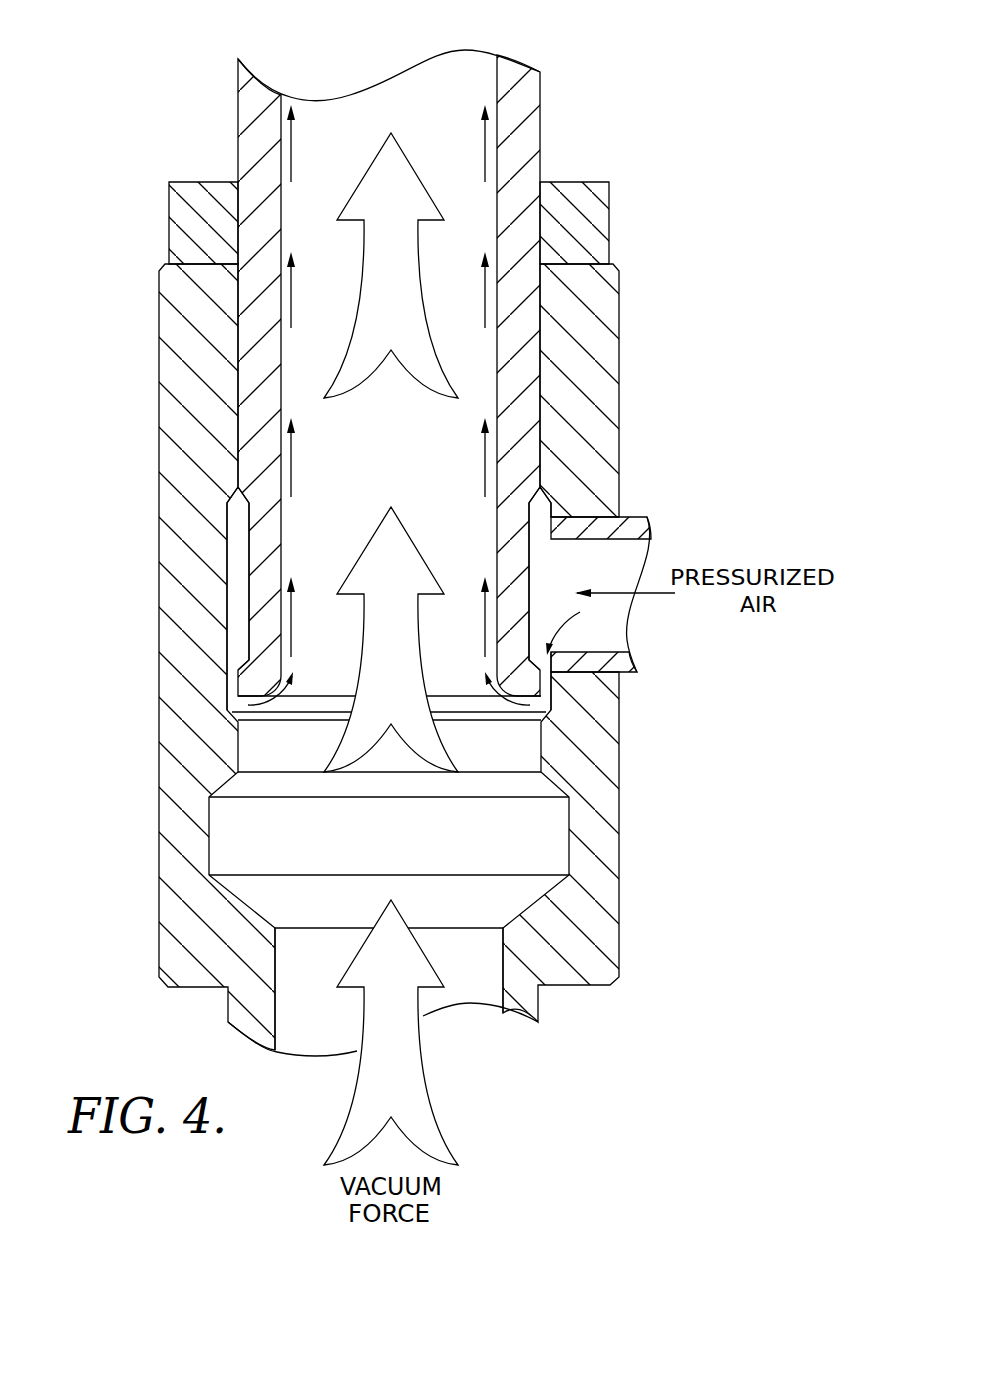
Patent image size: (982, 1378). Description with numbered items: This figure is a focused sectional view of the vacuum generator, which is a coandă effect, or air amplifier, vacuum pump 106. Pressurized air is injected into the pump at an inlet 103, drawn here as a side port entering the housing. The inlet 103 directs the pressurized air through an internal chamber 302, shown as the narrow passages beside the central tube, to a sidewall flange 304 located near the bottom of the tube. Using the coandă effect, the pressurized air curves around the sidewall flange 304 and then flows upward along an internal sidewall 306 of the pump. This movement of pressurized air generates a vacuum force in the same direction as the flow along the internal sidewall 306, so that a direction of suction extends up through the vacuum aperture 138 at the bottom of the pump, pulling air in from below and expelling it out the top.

The coandă effect vacuum pump 106 is at (100, 356).
The inlet 103 is at (638, 556).
The vacuum aperture 138 is at (473, 1048).
The internal chamber 302 is at (233, 596).
The sidewall flange 304 is at (250, 703).
The internal sidewall 306 is at (284, 207).